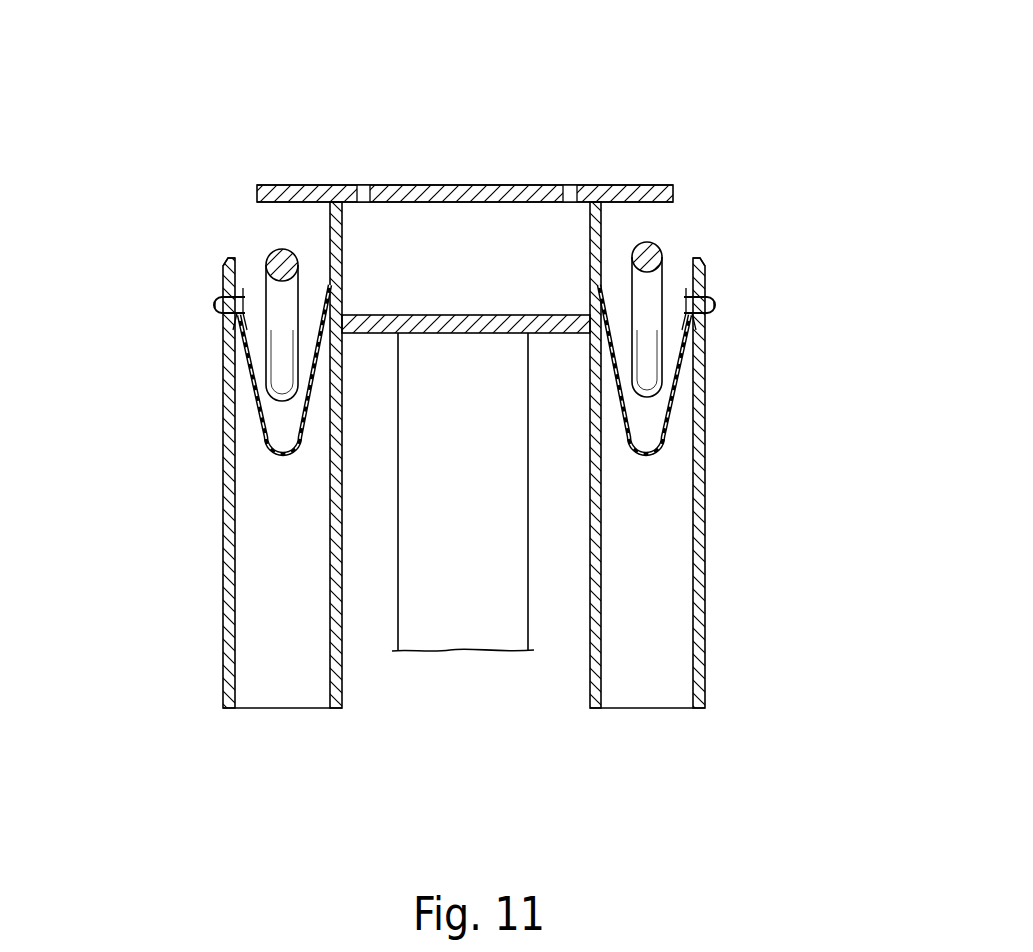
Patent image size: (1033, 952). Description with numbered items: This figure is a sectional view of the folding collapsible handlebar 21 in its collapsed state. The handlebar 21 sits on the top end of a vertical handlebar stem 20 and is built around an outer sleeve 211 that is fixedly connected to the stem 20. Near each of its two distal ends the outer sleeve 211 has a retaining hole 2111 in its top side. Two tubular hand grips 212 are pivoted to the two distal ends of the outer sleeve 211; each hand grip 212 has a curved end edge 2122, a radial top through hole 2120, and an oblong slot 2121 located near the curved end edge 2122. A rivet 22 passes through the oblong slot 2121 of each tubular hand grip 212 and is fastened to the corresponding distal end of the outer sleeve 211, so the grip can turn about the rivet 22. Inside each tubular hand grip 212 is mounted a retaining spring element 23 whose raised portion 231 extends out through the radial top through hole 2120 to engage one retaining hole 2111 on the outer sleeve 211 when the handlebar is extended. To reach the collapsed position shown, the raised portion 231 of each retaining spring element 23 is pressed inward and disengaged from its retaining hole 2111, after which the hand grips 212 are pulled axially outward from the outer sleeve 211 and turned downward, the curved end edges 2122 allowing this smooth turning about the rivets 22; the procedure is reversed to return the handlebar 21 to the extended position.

The vertical handlebar stem 20 is at (462, 636).
The folding collapsible handlebar 21 is at (473, 360).
The outer sleeve 211 is at (465, 128).
The retaining hole 2111 is at (364, 200).
The tubular hand grip 212 is at (473, 455).
The radial top through hole 2120 is at (226, 323).
The oblong slot 2121 is at (266, 380).
The curved end edge 2122 is at (236, 241).
The rivet 22 is at (278, 260).
The retaining spring element 23 is at (459, 421).
The raised portion 231 is at (215, 306).